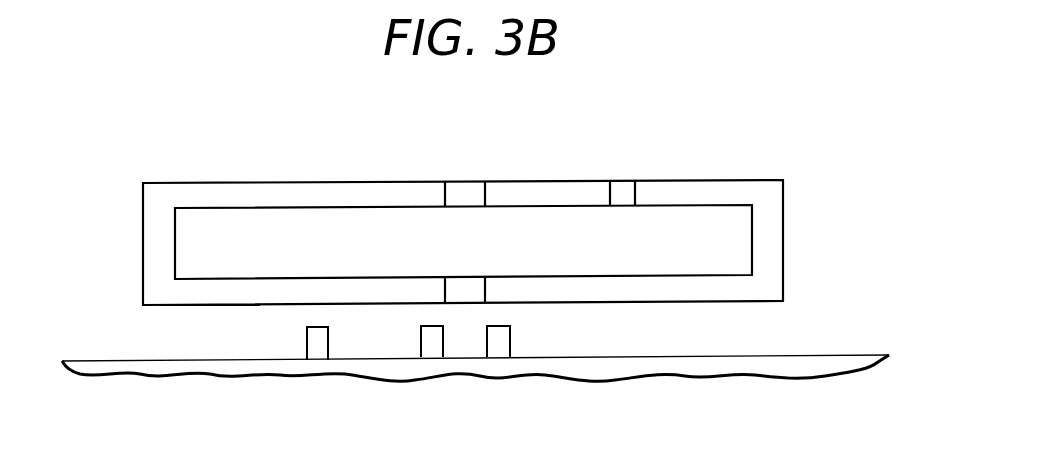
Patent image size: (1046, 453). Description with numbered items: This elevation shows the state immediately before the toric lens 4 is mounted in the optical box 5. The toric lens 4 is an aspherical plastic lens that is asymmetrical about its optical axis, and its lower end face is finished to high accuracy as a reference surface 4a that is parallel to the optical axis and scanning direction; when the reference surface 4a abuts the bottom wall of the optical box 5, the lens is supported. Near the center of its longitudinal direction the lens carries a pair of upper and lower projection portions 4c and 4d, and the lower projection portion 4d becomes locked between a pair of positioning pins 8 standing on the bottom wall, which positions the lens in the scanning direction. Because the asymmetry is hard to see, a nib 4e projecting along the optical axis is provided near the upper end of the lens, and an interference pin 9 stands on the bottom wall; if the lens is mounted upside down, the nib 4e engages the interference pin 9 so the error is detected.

The toric lens 4 is at (803, 180).
The reference surface 4a is at (208, 306).
The upper projection portion 4c is at (452, 181).
The lower projection portion 4d is at (470, 285).
The nib (projection) 4e is at (622, 181).
The optical box 5 is at (643, 370).
The positioning pins 8 is at (437, 343).
The interference pin 9 is at (318, 350).